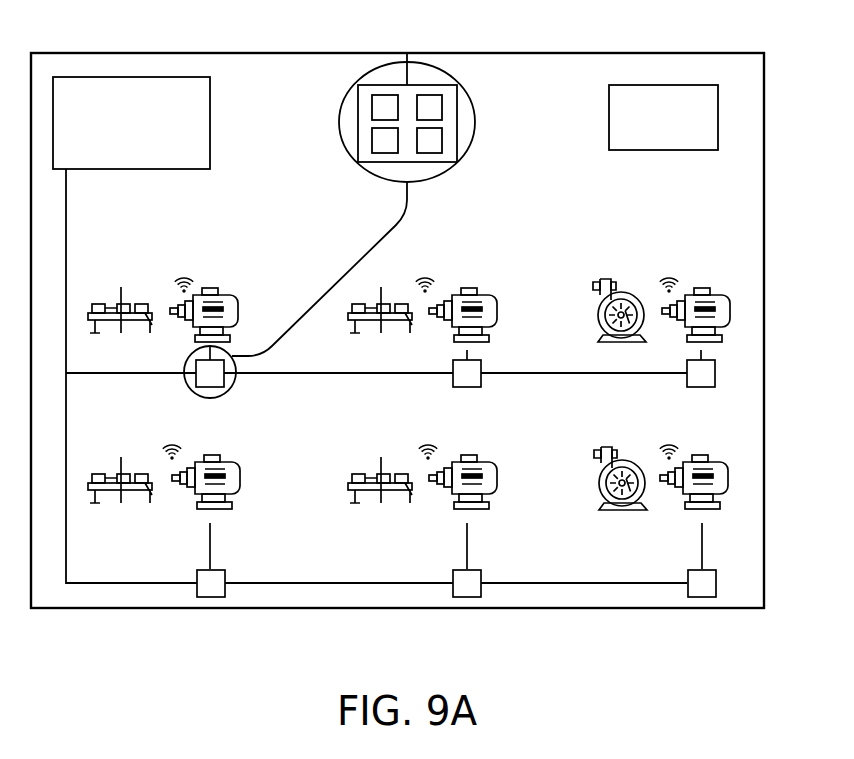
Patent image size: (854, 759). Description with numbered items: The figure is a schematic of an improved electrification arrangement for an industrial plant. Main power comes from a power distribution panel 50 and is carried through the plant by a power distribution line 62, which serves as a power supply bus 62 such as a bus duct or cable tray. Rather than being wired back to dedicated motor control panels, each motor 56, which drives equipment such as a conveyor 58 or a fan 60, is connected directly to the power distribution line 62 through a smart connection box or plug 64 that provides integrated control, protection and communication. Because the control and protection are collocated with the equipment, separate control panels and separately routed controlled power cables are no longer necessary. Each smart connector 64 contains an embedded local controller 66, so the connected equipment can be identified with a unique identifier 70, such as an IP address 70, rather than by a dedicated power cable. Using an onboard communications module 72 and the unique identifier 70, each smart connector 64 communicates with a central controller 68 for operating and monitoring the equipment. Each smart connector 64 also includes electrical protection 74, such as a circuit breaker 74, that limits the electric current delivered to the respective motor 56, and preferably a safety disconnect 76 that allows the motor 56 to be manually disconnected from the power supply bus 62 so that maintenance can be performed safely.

The power distribution panel 50 is at (183, 77).
The motor 56 is at (238, 301).
The conveyor 58 is at (123, 300).
The fan 60 is at (619, 285).
The power distribution line 62 is at (66, 218).
The smart connection box 64 is at (428, 73).
The embedded local controller 66 is at (372, 97).
The central controller 68 is at (694, 85).
The unique identifier 70 is at (258, 254).
The communications module 72 is at (442, 148).
The electrical protection 74 is at (372, 148).
The safety disconnect 76 is at (442, 97).